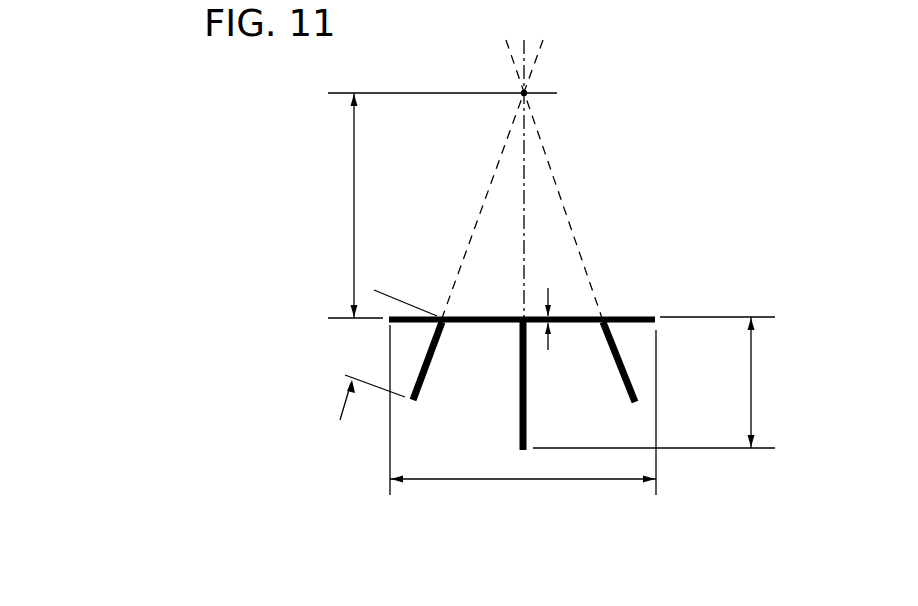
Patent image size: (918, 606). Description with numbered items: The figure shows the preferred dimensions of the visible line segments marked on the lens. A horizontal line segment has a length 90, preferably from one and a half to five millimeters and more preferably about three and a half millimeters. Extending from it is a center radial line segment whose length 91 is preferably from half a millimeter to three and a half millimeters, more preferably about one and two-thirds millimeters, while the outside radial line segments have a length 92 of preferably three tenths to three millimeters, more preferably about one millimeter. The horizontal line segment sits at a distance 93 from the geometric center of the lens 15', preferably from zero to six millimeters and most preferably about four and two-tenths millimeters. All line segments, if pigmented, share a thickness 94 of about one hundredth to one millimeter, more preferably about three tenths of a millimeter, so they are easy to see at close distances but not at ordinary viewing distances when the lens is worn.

The geometric center of lens 15' is at (469, 71).
The length of horizontal line segment 90 is at (546, 480).
The length of center radial line segment 91 is at (752, 376).
The length of outside radial line segments 92 is at (388, 289).
The distance from geometric center of lens to horizontal line segment 93 is at (354, 202).
The thickness of all line segments 94 is at (550, 307).